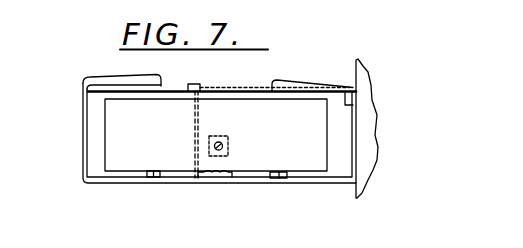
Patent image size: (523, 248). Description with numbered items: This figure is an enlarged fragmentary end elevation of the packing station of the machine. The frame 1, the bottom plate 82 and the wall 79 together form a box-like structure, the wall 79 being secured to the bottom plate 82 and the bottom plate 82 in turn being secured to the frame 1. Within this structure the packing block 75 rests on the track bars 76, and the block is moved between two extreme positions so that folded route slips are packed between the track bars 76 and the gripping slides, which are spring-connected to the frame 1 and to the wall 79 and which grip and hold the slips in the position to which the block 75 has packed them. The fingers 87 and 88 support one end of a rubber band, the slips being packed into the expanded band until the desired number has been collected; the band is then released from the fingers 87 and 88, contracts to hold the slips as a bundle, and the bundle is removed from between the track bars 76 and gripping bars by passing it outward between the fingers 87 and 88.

The frame 1 is at (360, 136).
The packing block 75 is at (105, 134).
The track bars 76 is at (150, 176).
The wall 79 is at (81, 155).
The bottom plate 82 is at (112, 180).
The finger 87 is at (207, 88).
The finger 88 is at (200, 180).